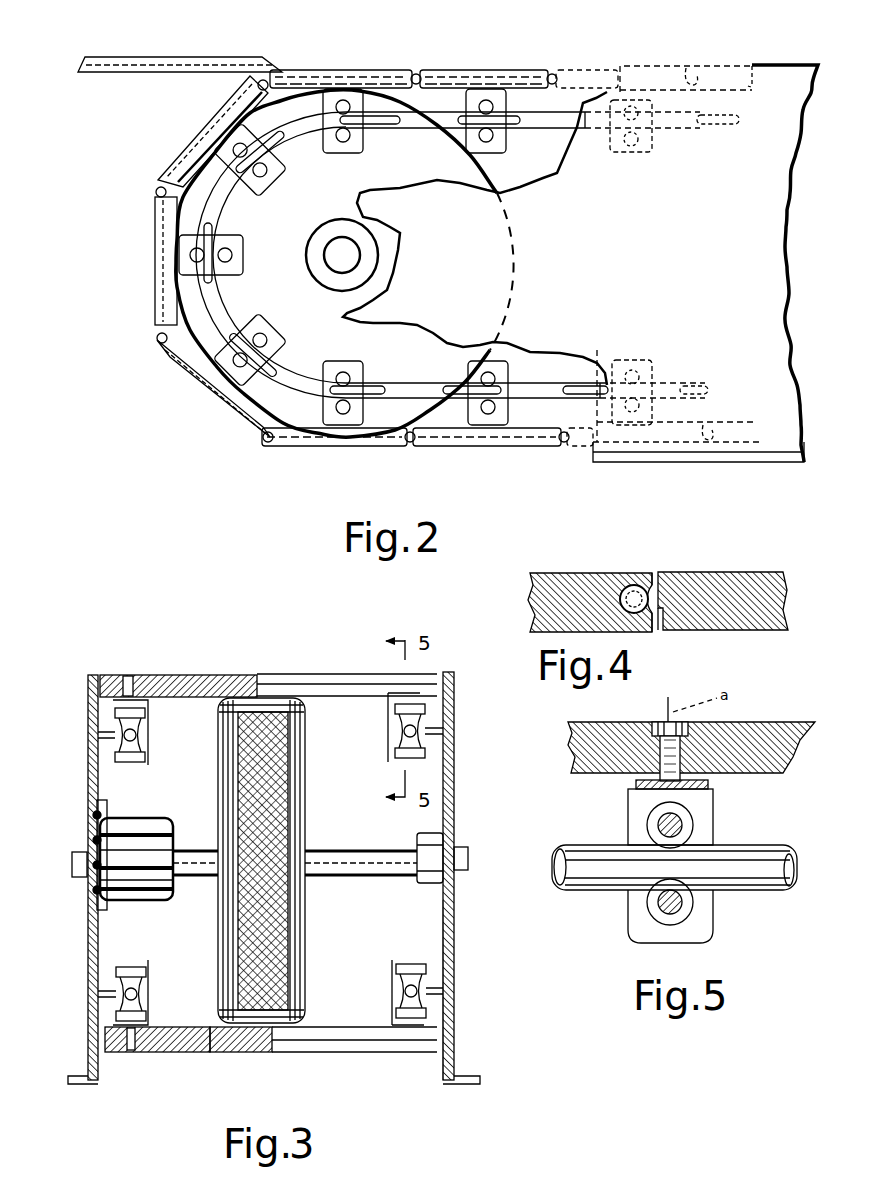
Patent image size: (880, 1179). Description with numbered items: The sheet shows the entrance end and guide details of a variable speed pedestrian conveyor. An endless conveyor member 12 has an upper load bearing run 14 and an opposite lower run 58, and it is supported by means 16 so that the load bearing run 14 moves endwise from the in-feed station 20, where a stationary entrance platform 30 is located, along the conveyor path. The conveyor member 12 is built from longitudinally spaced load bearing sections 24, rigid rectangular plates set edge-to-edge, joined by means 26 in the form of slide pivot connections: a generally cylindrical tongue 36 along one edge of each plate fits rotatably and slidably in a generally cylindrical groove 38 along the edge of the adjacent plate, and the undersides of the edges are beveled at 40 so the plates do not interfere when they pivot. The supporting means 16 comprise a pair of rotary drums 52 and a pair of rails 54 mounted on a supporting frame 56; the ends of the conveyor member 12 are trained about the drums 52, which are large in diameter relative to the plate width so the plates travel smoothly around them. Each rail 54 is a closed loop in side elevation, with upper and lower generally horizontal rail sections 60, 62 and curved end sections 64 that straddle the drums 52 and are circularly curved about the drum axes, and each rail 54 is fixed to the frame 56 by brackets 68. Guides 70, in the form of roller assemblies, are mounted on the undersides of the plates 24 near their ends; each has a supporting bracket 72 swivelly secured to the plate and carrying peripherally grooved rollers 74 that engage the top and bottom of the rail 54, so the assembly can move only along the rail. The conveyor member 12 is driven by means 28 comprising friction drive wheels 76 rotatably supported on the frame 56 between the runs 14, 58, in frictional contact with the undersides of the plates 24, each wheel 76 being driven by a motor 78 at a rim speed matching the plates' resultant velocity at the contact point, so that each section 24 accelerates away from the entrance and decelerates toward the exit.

In FIG. 2, the endless conveyor member 12 is at (648, 62).
In FIG. 2, the load bearing run 14 is at (758, 78).
In FIG. 3, the load bearing run 14 is at (215, 670).
In FIG. 2, the supporting means 16 is at (504, 322).
In FIG. 2, the in-feed station 20 is at (387, 40).
In FIG. 2, the load bearing sections 24 is at (356, 75).
In FIG. 2, the joining means 26 is at (484, 56).
In FIG. 4, the joining means 26 is at (652, 572).
In FIG. 3, the drive means 28 is at (128, 777).
In FIG. 2, the stationary entrance platform 30 is at (187, 60).
In FIG. 4, the tongue 36 is at (690, 567).
In FIG. 4, the groove 38 is at (632, 584).
In FIG. 4, the bevel 40 is at (656, 632).
In FIG. 2, the rotary drums 52 is at (492, 283).
In FIG. 2, the rails 54 is at (568, 377).
In FIG. 5, the rails 54 is at (568, 843).
In FIG. 3, the supporting frame 56 is at (460, 946).
In FIG. 2, the lower run 58 is at (765, 420).
In FIG. 3, the lower run 58 is at (203, 1050).
In FIG. 2, the upper rail section 60 is at (693, 115).
In FIG. 2, the lower rail section 62 is at (666, 384).
In FIG. 2, the curved end sections 64 is at (217, 307).
In FIG. 2, the brackets 68 is at (448, 428).
In FIG. 3, the brackets 68 is at (472, 876).
In FIG. 5, the guides 70 is at (730, 825).
In FIG. 5, the supporting bracket 72 is at (693, 802).
In FIG. 5, the rollers 74 is at (653, 822).
In FIG. 3, the friction drive wheels 76 is at (305, 783).
In FIG. 3, the motor 78 is at (181, 885).